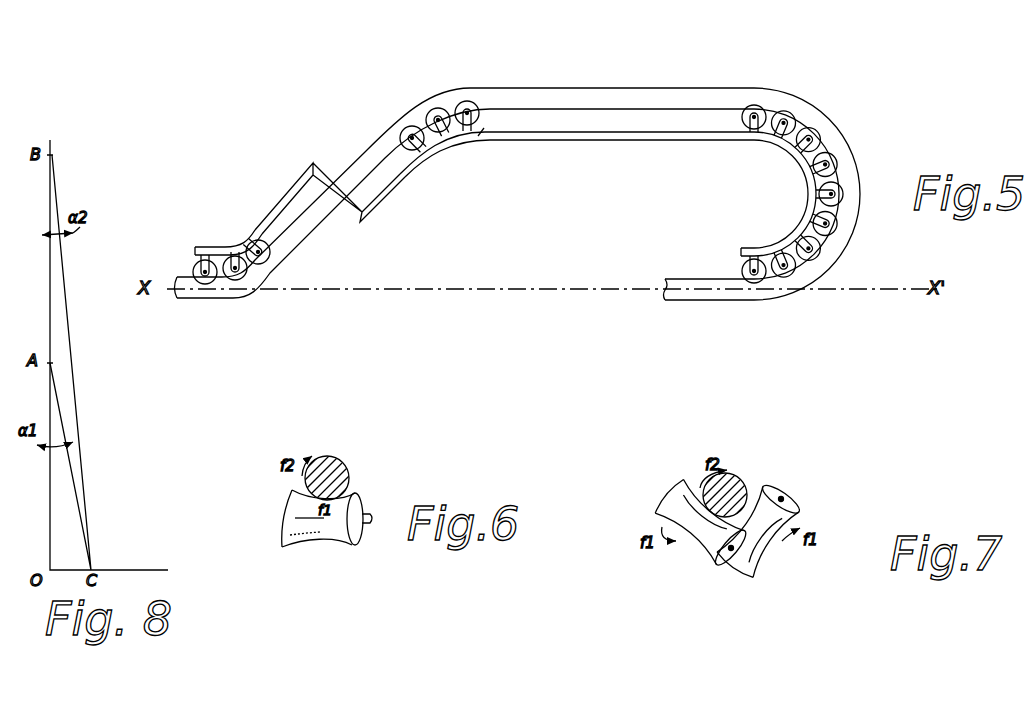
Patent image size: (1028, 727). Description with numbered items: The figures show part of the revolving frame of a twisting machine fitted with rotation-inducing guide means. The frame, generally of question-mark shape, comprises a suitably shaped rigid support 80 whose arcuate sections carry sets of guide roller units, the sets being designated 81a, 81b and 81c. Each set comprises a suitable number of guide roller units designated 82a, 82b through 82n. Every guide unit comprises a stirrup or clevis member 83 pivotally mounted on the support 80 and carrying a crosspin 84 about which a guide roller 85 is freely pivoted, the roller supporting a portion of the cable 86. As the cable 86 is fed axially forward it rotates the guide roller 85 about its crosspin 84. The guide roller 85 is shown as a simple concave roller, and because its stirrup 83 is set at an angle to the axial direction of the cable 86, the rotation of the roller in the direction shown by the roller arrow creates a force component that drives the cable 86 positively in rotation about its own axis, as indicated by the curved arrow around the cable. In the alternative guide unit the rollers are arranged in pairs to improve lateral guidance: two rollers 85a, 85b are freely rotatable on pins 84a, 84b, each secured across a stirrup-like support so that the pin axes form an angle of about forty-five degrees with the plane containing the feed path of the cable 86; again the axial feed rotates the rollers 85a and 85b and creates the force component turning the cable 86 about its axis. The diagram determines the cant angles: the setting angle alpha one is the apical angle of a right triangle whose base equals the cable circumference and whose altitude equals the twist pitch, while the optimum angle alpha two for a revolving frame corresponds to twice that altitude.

In FIG. 5, the rigid support 80 is at (632, 139).
In FIG. 5, the set of guide roller units 81a is at (227, 240).
In FIG. 5, the set of guide roller units 81b is at (460, 152).
In FIG. 5, the set of guide roller units 81c is at (789, 198).
In FIG. 5, the guide roller unit 82a is at (207, 287).
In FIG. 5, the guide roller unit 82b is at (250, 287).
In FIG. 5, the guide roller unit 82n is at (744, 268).
In FIG. 5, the stirrup or clevis member 83 is at (481, 137).
In FIG. 5, the crosspin 84 is at (470, 106).
In FIG. 7, the pin 84a is at (785, 500).
In FIG. 7, the pin 84b is at (735, 550).
In FIG. 5, the guide roller 85 is at (461, 101).
In FIG. 6, the guide roller 85 is at (322, 532).
In FIG. 7, the roller 85a is at (740, 570).
In FIG. 7, the roller 85b is at (712, 560).
In FIG. 5, the cable 86 is at (592, 88).
In FIG. 6, the cable 86 is at (344, 464).
In FIG. 7, the cable 86 is at (742, 480).